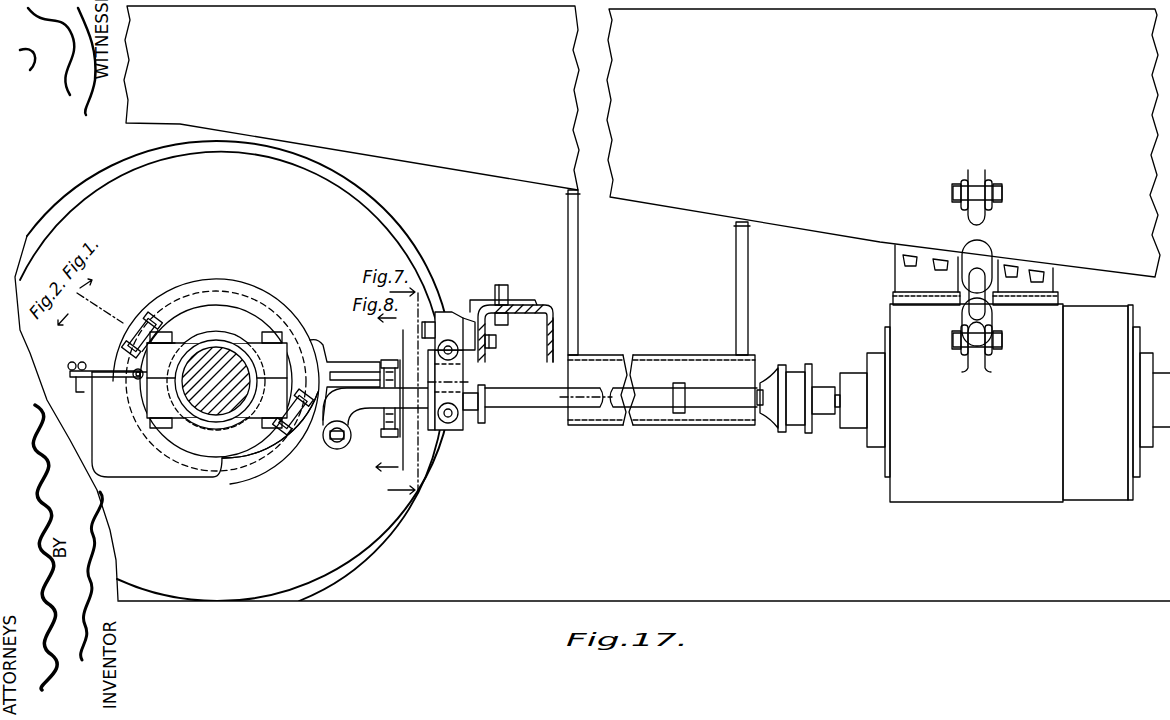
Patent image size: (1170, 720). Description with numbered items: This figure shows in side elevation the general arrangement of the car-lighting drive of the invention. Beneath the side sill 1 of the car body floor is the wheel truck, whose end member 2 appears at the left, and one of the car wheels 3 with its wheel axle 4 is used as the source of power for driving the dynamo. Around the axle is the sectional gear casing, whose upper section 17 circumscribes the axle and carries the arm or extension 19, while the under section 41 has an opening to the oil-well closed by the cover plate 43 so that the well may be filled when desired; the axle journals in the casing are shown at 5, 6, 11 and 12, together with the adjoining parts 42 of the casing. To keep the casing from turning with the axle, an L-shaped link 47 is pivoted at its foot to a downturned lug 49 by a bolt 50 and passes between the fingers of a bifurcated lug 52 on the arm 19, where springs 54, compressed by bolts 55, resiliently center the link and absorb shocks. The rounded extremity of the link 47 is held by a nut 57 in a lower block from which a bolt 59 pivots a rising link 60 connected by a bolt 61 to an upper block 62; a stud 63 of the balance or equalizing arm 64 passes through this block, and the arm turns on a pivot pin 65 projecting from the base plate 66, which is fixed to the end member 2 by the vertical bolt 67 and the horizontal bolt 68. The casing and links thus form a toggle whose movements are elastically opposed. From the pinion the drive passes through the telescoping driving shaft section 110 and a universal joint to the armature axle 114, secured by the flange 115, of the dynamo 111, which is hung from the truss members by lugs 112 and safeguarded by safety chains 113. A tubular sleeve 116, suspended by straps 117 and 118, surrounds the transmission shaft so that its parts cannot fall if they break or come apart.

The side sill 1 is at (642, 141).
The end member of the wheel truck 2 is at (557, 327).
The car wheel 3 is at (236, 371).
The wheel axle 4 is at (214, 350).
The bearing sleeve 5 is at (229, 346).
The bearing block half 6 is at (217, 380).
The bearing block half 11 is at (269, 380).
The bearing housing 12 is at (214, 424).
The upper section of the gear casing 17 is at (256, 290).
The arm or extension 19 is at (352, 372).
The under section of the gear casing 41 is at (270, 430).
The housing 42 is at (205, 424).
The cover plate 43 is at (72, 370).
The link 47 is at (376, 404).
The downturned lug 49 is at (344, 443).
The bolt 50 is at (335, 448).
The bifurcated lug 52 is at (390, 360).
The spring 54 is at (390, 437).
The bolt 55 is at (400, 358).
The nut 57 is at (482, 406).
The bolt 59 is at (450, 425).
The link 60 is at (455, 384).
The bolt 61 is at (440, 351).
The upper block 62 is at (449, 331).
The stud 63 is at (431, 313).
The balance or equalizing arm 64 is at (465, 313).
The pivot pin 65 is at (432, 432).
The base plate 66 is at (529, 304).
The vertical bolt 67 is at (499, 285).
The horizontal bolt 68 is at (500, 346).
The driving shaft section 110 is at (624, 398).
The dynamo 111 is at (1018, 403).
The lug 112 is at (956, 259).
The safety chain 113 is at (987, 218).
The armature axle 114 is at (836, 408).
The flange 115 is at (823, 387).
The tubular sleeve 116 is at (695, 358).
The strap 117 is at (578, 250).
The strap 118 is at (748, 285).